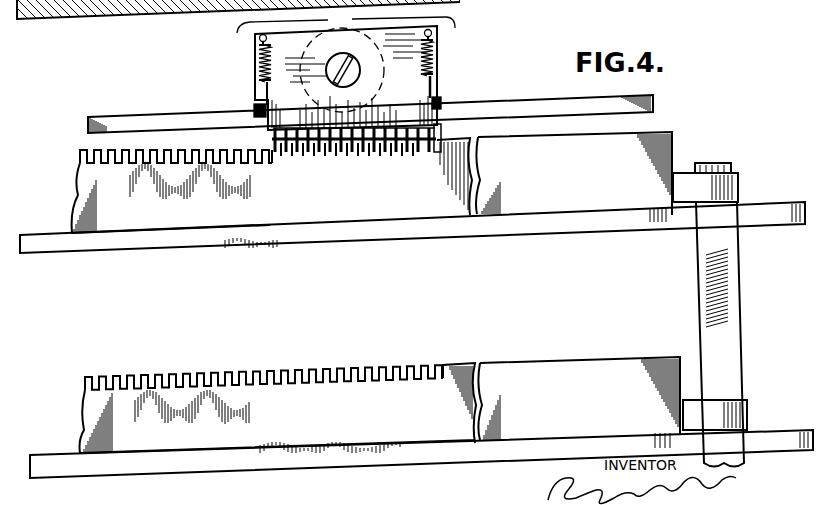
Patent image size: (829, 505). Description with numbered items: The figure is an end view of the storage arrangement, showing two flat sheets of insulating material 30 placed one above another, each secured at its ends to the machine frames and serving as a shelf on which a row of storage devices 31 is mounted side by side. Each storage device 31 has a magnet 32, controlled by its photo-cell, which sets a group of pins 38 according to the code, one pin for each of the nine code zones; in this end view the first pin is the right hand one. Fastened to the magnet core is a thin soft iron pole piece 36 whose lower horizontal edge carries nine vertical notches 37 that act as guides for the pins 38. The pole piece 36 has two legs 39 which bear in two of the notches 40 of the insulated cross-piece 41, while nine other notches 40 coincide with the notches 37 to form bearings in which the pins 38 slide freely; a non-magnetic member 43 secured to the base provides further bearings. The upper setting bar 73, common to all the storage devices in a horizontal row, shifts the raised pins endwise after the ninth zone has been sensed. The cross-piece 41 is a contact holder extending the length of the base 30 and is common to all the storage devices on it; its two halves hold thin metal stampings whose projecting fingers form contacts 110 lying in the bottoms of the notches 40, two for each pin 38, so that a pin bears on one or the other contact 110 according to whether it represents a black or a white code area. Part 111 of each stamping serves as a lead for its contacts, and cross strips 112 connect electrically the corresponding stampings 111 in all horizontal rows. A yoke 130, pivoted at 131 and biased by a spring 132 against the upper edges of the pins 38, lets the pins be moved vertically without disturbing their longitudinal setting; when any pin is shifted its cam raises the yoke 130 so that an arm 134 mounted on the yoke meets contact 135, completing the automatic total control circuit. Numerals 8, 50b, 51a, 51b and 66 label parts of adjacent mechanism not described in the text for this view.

The flat sheet of insulating material 30 is at (487, 455).
The storage device 31 is at (346, 22).
The magnet 32 is at (386, 60).
The soft iron pole piece 36 is at (256, 120).
The vertical notches 37 is at (302, 155).
The pins 38 is at (398, 155).
The legs 39 is at (417, 155).
The notches 40 is at (165, 377).
The insulated cross-piece 41 is at (250, 378).
The upper setting bar 73 is at (143, 118).
The contacts 110 is at (350, 155).
The lead part of stamping 111 is at (748, 411).
The cross strips 112 is at (743, 280).
The yoke 130 is at (397, 104).
The pivot 131 is at (434, 100).
The spring 132 is at (434, 50).
The arm 134 is at (443, 110).
The contact 135 is at (442, 130).
The guide plate member 43 is at (548, 0).
The frame 8 is at (583, 8).
The lever 50b is at (600, 0).
The link 66 is at (632, 0).
The lever 51b is at (720, 0).
The lever 51a is at (755, 0).